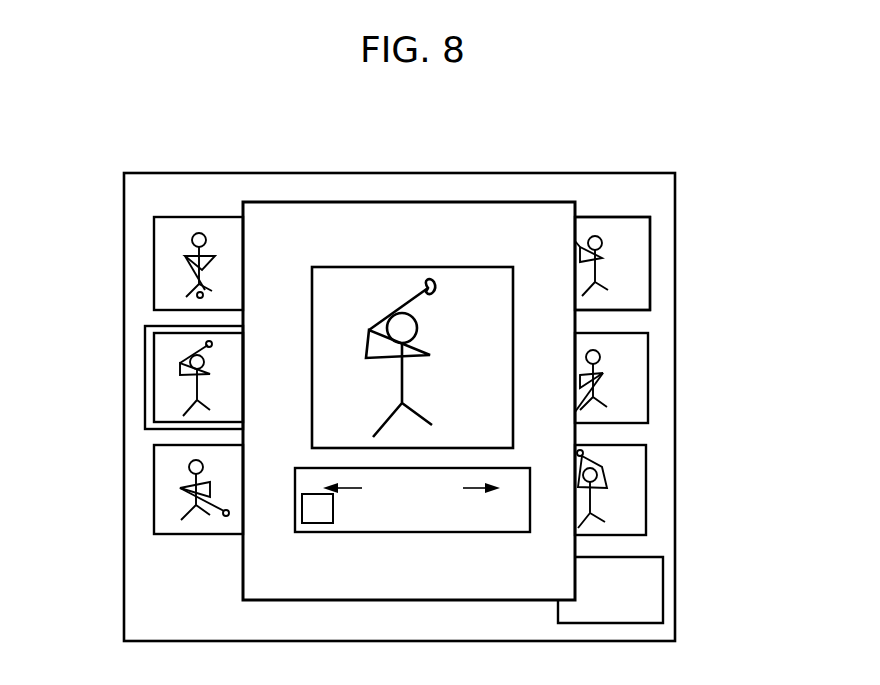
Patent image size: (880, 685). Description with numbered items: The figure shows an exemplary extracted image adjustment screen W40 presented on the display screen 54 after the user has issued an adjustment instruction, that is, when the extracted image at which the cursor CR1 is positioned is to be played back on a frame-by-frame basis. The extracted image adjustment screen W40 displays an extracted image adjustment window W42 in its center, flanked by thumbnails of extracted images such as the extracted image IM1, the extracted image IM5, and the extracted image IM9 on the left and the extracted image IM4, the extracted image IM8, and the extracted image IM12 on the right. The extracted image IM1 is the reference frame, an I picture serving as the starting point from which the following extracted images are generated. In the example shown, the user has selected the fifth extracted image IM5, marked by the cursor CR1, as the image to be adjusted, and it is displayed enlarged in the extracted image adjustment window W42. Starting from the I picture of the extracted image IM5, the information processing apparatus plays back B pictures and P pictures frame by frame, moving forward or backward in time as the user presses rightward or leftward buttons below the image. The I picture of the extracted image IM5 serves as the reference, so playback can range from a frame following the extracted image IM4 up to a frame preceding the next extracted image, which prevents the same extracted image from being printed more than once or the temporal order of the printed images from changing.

The extracted image adjustment screen W40 is at (685, 138).
The extracted image adjustment window W42 is at (361, 202).
The display screen 54 is at (614, 173).
The extracted image IM1 is at (208, 217).
The extracted image IM4 is at (626, 290).
The extracted image IM5 is at (475, 267).
The extracted image IM8 is at (628, 354).
The extracted image IM9 is at (165, 490).
The extracted image IM12 is at (625, 480).
The cursor CR1 is at (145, 392).